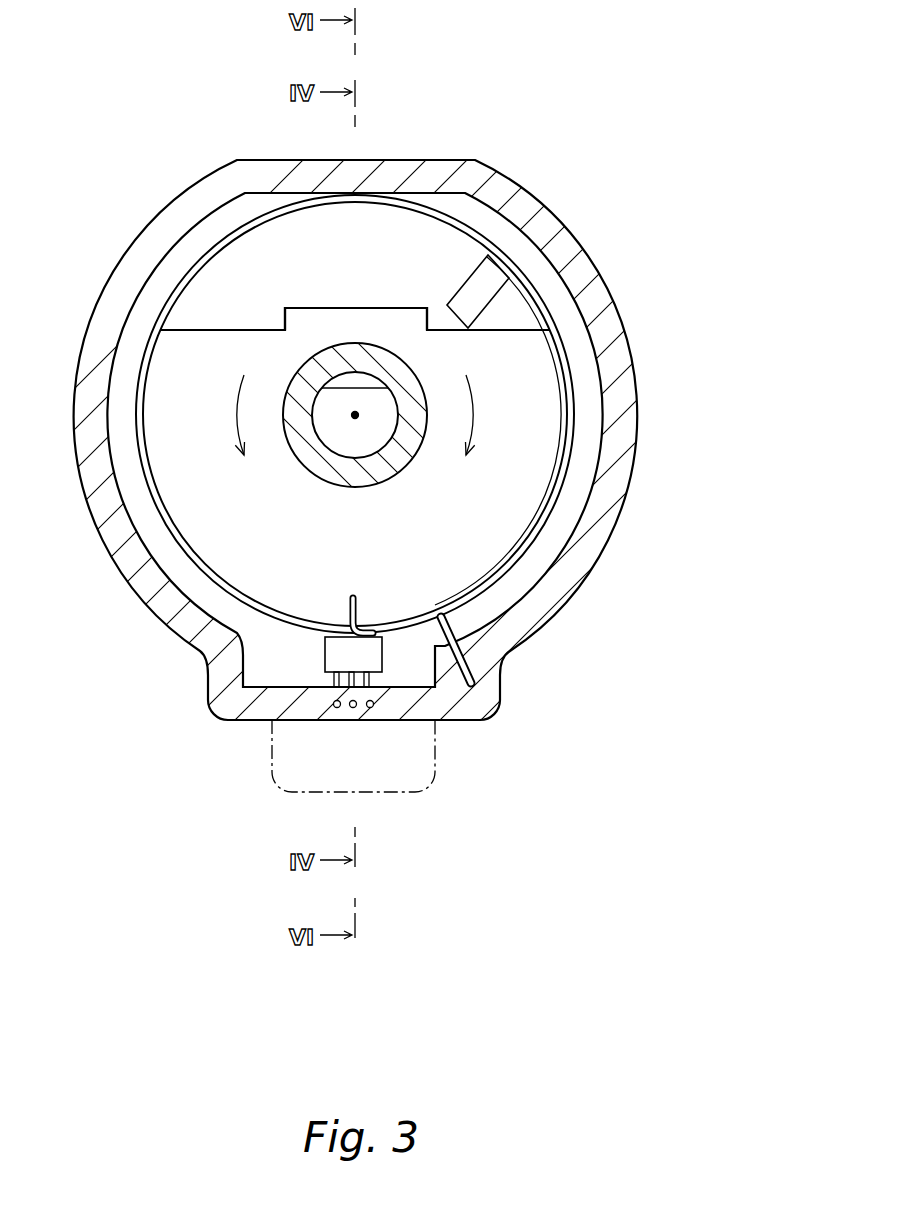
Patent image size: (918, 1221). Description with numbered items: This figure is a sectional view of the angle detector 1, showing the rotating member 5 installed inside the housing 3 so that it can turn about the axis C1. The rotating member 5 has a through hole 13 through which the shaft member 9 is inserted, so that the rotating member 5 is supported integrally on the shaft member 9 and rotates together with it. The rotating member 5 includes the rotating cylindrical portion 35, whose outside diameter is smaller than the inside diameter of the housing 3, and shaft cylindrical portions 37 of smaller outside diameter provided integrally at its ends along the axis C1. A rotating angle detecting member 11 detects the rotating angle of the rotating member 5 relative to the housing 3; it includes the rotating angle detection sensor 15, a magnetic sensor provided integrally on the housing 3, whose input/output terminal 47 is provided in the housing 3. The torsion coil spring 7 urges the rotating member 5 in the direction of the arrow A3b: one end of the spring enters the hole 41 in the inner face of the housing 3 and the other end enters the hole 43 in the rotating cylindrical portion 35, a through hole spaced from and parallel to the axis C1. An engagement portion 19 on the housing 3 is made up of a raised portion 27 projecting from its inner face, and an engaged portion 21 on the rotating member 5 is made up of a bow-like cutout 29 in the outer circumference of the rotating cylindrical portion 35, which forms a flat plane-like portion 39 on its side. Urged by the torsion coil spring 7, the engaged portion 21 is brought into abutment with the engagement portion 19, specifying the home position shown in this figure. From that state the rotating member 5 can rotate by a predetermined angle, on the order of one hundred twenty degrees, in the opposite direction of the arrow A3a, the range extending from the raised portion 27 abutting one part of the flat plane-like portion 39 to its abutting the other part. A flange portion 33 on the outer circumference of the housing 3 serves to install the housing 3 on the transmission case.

The angle detector 1 is at (459, 500).
The housing 3 is at (459, 500).
The rotating member 5 is at (514, 515).
The torsion coil spring 7 is at (520, 214).
The shaft member 9 is at (340, 438).
The rotating angle detecting member 11 is at (276, 658).
The through hole 13 is at (232, 517).
The rotating angle detection sensor 15 is at (376, 650).
The engagement portion 19 is at (555, 261).
The engaged portion 21 is at (390, 217).
The raised portion 27 is at (497, 278).
The cutout 29 is at (437, 328).
The flange portion 33 is at (400, 795).
The rotating cylindrical portion 35 is at (545, 462).
The shaft cylindrical portion 37 is at (390, 478).
The flat plane-like portion 39 is at (245, 330).
The hole 41 is at (472, 683).
The hole 43 is at (360, 598).
The input/output terminal 47 is at (354, 708).
The arrow A3a is at (482, 405).
The arrow A3b is at (227, 403).
The axis C1 is at (358, 418).